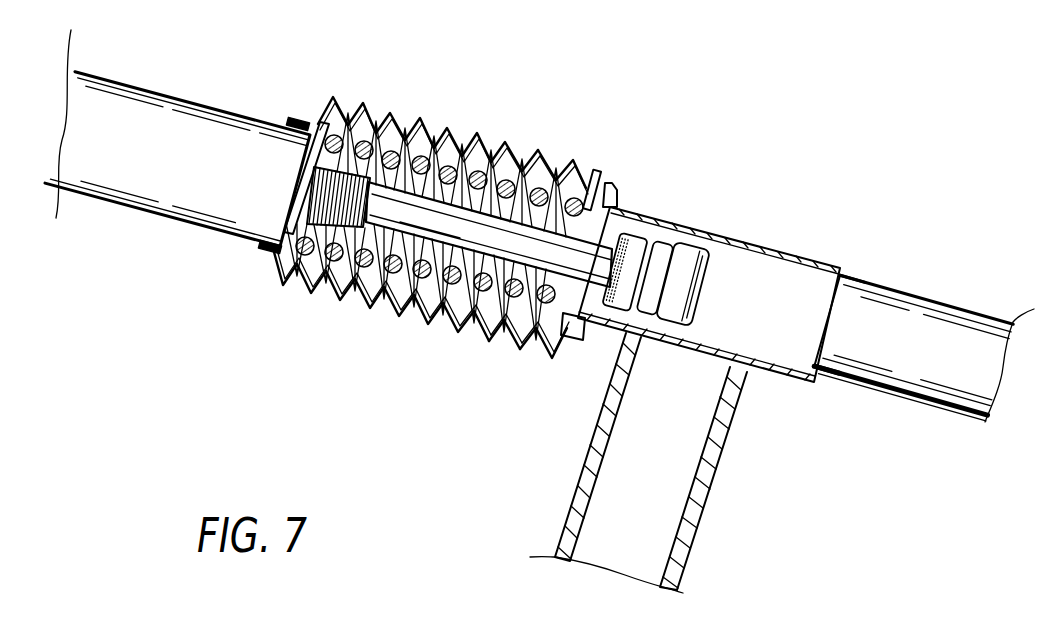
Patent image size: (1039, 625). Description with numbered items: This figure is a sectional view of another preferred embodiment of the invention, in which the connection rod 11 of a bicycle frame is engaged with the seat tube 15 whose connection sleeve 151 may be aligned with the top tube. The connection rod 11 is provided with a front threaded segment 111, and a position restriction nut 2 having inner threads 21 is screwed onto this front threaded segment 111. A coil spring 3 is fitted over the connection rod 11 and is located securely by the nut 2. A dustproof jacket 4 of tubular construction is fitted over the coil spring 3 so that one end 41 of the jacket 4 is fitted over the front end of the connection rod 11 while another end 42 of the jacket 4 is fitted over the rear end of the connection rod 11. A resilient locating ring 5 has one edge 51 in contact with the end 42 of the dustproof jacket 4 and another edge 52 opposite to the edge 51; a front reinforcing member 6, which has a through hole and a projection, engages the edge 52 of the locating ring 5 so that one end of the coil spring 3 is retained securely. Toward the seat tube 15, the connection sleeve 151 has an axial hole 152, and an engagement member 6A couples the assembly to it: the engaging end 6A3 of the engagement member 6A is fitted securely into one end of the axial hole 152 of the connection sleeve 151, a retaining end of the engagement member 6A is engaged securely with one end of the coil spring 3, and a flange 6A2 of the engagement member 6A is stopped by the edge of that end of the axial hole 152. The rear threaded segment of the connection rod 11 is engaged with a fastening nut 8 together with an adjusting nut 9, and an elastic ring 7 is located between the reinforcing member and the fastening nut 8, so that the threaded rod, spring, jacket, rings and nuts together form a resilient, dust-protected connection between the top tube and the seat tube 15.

The position restriction nut 2 is at (321, 120).
The coil spring 3 is at (429, 116).
The dustproof jacket 4 is at (374, 98).
The resilient locating ring 5 is at (561, 150).
The front reinforcing member 6 is at (450, 338).
The engagement member 6A is at (617, 140).
The flange 6A2 is at (607, 180).
The engaging end 6A3 is at (587, 334).
The elastic ring 7 is at (627, 234).
The fastening nut 8 is at (660, 246).
The nut 9 is at (686, 254).
The connection rod 11 is at (494, 232).
The seat tube 15 is at (953, 292).
The inner threads 21 is at (268, 256).
The one end of the jacket 41 is at (302, 118).
The another end of the jacket 42 is at (593, 172).
The one edge of the locating ring 51 is at (517, 344).
The another edge of the locating ring 52 is at (550, 328).
The front threaded segment 111 is at (312, 290).
The connection sleeve 151 is at (820, 266).
The axial hole 152 is at (793, 362).